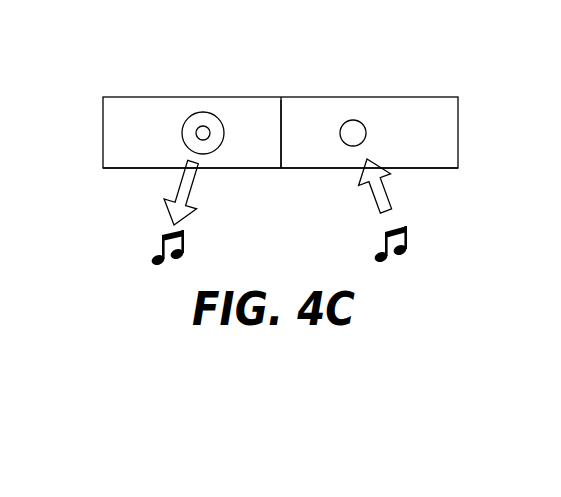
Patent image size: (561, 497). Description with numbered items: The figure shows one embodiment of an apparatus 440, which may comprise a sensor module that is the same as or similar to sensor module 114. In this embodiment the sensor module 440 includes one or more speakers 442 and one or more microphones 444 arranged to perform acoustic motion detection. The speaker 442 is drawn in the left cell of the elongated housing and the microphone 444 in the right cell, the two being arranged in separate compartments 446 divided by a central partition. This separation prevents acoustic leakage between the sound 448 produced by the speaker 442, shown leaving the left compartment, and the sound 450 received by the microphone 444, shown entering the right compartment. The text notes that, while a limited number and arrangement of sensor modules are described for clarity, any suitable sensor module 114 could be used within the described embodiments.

The apparatus 440 is at (292, 19).
The sensor module 114 is at (123, 168).
The speaker 442 is at (191, 116).
The microphone 444 is at (350, 120).
The separate compartments 446 is at (247, 150).
The sound produced by speaker 448 is at (148, 225).
The sound received by microphone 450 is at (412, 222).